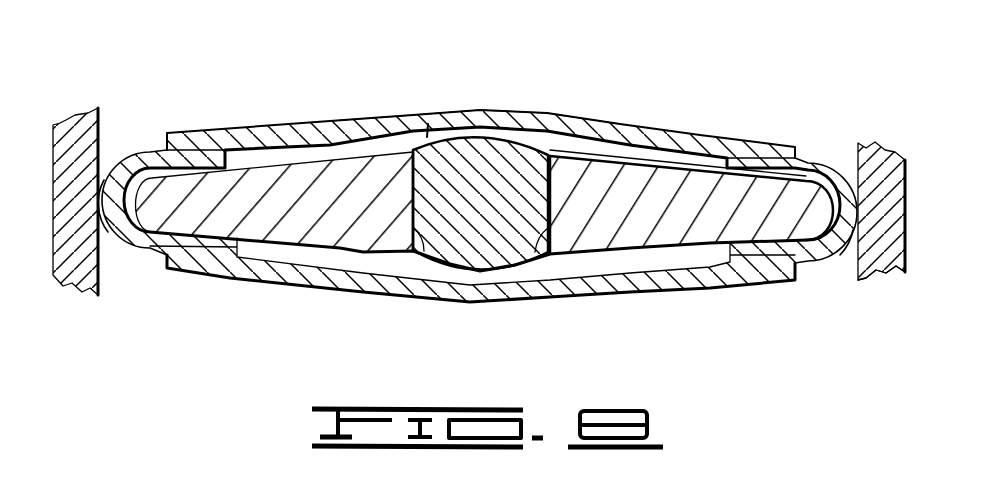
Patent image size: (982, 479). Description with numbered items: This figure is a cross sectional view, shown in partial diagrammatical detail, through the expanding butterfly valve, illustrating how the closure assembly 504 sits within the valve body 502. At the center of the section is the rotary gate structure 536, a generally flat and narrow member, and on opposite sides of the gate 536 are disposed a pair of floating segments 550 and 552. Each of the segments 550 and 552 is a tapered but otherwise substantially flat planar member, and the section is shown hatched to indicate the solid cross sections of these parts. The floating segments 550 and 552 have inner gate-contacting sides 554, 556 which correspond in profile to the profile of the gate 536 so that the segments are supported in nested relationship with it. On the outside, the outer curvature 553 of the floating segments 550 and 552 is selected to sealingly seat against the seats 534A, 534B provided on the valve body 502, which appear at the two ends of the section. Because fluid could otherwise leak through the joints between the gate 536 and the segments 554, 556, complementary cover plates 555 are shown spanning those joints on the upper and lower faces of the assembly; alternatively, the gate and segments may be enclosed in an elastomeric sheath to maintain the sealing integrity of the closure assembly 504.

The valve body 502 is at (900, 274).
The closure assembly 504 is at (598, 100).
The seating surface 534A is at (99, 252).
The seating surface 534B is at (862, 272).
The rotary gate structure 536 is at (425, 130).
The floating segment 550 is at (680, 253).
The floating segment 552 is at (302, 250).
The outer curvature 553 is at (98, 196).
The inner gate-contacting side 554 is at (545, 250).
The cover plates 555 is at (770, 147).
The inner gate-contacting side 556 is at (416, 253).